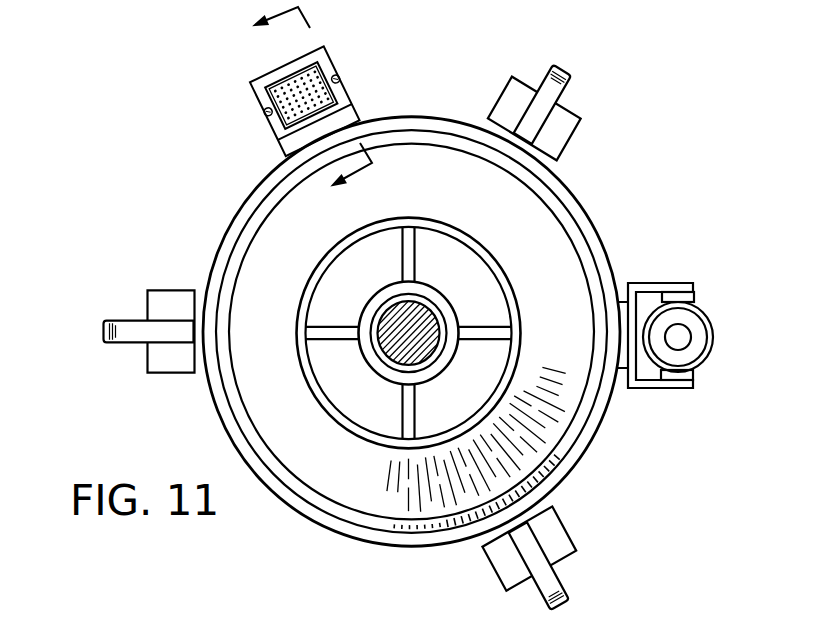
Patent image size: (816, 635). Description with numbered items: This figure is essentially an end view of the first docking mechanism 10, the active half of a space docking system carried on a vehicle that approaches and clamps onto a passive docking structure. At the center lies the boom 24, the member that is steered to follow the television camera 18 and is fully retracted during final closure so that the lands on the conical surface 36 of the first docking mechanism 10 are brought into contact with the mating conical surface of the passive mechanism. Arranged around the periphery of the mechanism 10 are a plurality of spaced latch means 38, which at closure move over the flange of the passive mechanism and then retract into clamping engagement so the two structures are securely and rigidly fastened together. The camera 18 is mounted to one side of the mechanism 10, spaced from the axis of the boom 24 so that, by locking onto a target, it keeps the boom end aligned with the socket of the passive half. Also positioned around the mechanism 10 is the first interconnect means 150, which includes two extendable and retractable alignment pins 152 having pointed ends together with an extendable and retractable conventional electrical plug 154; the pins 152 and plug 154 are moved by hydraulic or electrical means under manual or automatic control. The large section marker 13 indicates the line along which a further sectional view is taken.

The first docking mechanism 10 is at (585, 227).
The section line for FIG. 13 is at (283, 121).
The television camera 18 is at (707, 320).
The boom 24 is at (430, 313).
The conical surface 36 is at (350, 411).
The latch means 38 is at (562, 68).
The first interconnect means 150 is at (253, 91).
The alignment pins 152 is at (340, 82).
The electrical plug 154 is at (279, 125).